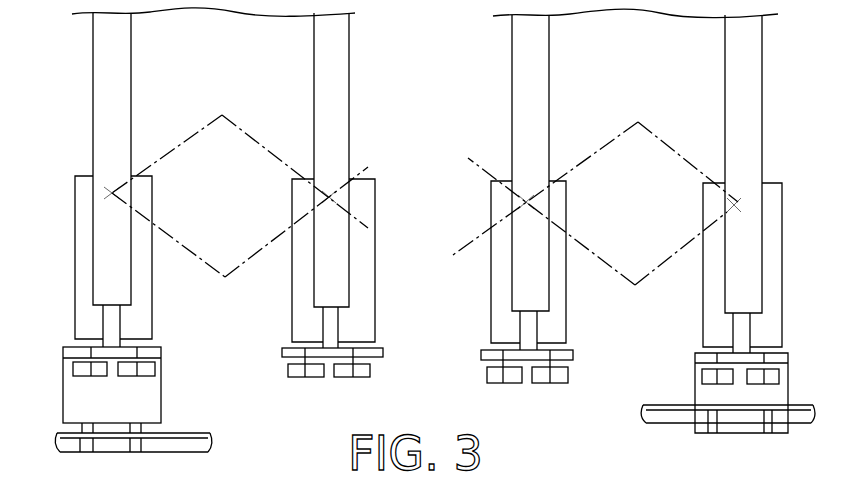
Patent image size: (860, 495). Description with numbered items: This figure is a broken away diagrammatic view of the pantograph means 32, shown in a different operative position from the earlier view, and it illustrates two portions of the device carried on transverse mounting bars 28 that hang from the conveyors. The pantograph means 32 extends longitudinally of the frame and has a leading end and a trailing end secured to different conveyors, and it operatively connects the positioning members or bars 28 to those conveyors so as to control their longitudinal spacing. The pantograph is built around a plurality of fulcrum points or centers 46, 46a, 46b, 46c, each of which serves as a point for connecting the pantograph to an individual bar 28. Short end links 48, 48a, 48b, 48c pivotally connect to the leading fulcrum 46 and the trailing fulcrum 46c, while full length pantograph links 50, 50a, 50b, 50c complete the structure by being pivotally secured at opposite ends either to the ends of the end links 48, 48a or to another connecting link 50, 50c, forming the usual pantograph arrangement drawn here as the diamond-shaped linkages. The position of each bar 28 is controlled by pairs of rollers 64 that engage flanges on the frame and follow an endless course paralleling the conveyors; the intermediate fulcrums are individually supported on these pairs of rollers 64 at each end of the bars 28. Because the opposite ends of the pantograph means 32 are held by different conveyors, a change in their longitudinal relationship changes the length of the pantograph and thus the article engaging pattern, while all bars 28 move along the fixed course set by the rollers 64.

The mounting bar 28 is at (552, 66).
The pantograph means 32 is at (582, 213).
The leading fulcrum 46 is at (112, 193).
The fulcrum point 46a is at (330, 195).
The fulcrum point 46b is at (525, 198).
The trailing fulcrum 46c is at (737, 202).
The short end link 48 is at (184, 142).
The short end link 48a is at (200, 263).
The short end link 48b is at (668, 142).
The short end link 48c is at (672, 272).
The full length pantograph link 50 is at (249, 134).
The full length pantograph link 50a is at (248, 262).
The full length pantograph link 50b is at (601, 146).
The full length pantograph link 50c is at (600, 272).
The rollers 64 is at (357, 378).